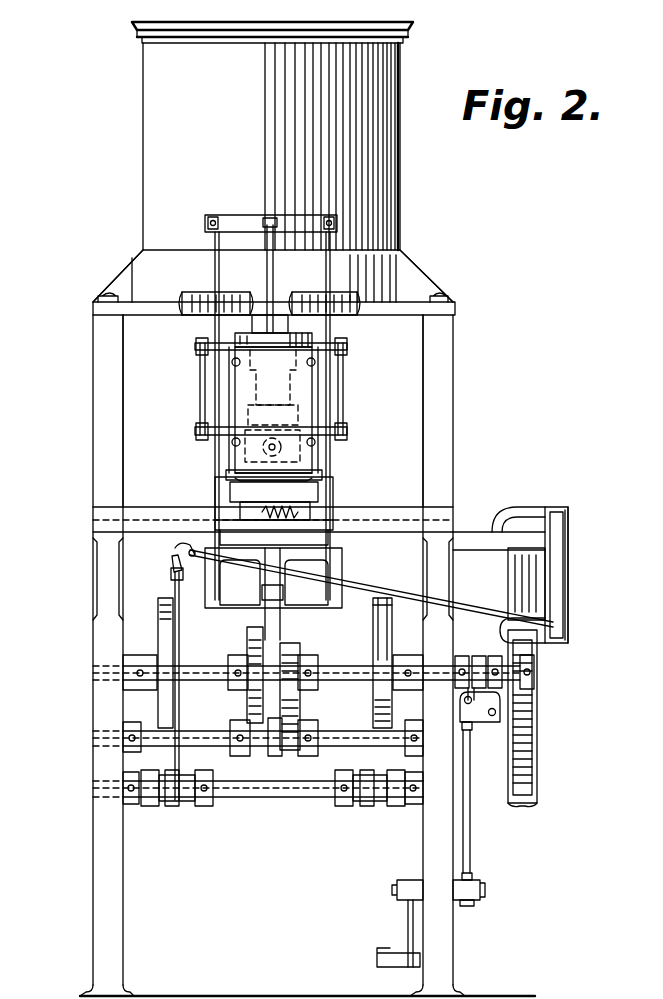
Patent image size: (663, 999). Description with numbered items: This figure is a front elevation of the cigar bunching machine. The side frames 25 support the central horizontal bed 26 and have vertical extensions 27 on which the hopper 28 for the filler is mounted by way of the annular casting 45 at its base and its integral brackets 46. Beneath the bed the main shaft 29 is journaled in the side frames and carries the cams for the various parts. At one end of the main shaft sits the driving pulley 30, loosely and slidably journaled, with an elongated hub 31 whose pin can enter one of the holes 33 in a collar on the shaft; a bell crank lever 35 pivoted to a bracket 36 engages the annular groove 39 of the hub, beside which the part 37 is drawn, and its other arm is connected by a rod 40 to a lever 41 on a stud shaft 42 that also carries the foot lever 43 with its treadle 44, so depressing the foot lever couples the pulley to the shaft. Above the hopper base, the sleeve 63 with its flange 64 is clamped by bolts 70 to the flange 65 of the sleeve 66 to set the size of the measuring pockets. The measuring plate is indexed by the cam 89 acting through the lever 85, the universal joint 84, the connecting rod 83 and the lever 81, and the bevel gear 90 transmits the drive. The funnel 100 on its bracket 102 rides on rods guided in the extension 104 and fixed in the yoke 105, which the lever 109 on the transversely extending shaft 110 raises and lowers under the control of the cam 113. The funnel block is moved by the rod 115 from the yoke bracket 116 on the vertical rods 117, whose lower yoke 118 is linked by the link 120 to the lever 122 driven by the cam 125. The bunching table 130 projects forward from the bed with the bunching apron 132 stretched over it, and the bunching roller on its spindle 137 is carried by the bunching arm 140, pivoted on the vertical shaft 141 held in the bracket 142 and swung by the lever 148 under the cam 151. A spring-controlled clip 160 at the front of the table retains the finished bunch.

The side frames 25 is at (110, 880).
The central horizontal bed 26 is at (163, 497).
The vertical extensions 27 is at (110, 422).
The hopper 28 is at (273, 162).
The main shaft 29 is at (210, 675).
The driving pulley 30 is at (530, 758).
The elongated hub 31 is at (479, 664).
The holes 33 is at (458, 668).
The bell crank lever 35 is at (466, 740).
The bracket 36 is at (466, 722).
The pulley hub 37 is at (528, 700).
The annular groove 39 is at (496, 664).
The rod 40 is at (470, 822).
The lever 41 is at (466, 906).
The stud shaft 42 is at (393, 890).
The foot lever 43 is at (408, 925).
The treadle 44 is at (378, 960).
The annular casting 45 is at (400, 258).
The integral brackets 46 is at (118, 290).
The sleeve 63 is at (258, 316).
The flange 64 is at (240, 337).
The flange 65 is at (340, 348).
The sleeve 66 is at (306, 798).
The bolts 70 is at (300, 338).
The lever 81 is at (185, 547).
The connecting rod 83 is at (176, 560).
The universal joint 84 is at (172, 575).
The lever 85 is at (178, 805).
The cam 89 is at (165, 632).
The bevel gear 90 is at (300, 470).
The funnel 100 is at (312, 425).
The bracket 102 is at (312, 392).
The extension 104 is at (205, 298).
The yoke 105 is at (244, 596).
The lever 109 is at (258, 751).
The transversely extending shaft 110 is at (398, 684).
The cam 113 is at (247, 706).
The rod 115 is at (268, 290).
The yoke bracket 116 is at (242, 224).
The vertical rods 117 is at (312, 408).
The yoke 118 is at (312, 598).
The link 120 is at (278, 648).
The lever 122 is at (278, 755).
The cam 125 is at (300, 702).
The bunching table 130 is at (215, 498).
The bunching apron 132 is at (333, 500).
The spindle 137 is at (325, 482).
The bunching arm 140 is at (482, 520).
The vertical shaft 141 is at (568, 522).
The bracket 142 is at (568, 636).
The lever 148 is at (368, 806).
The cam 151 is at (386, 642).
The clip 160 is at (335, 522).